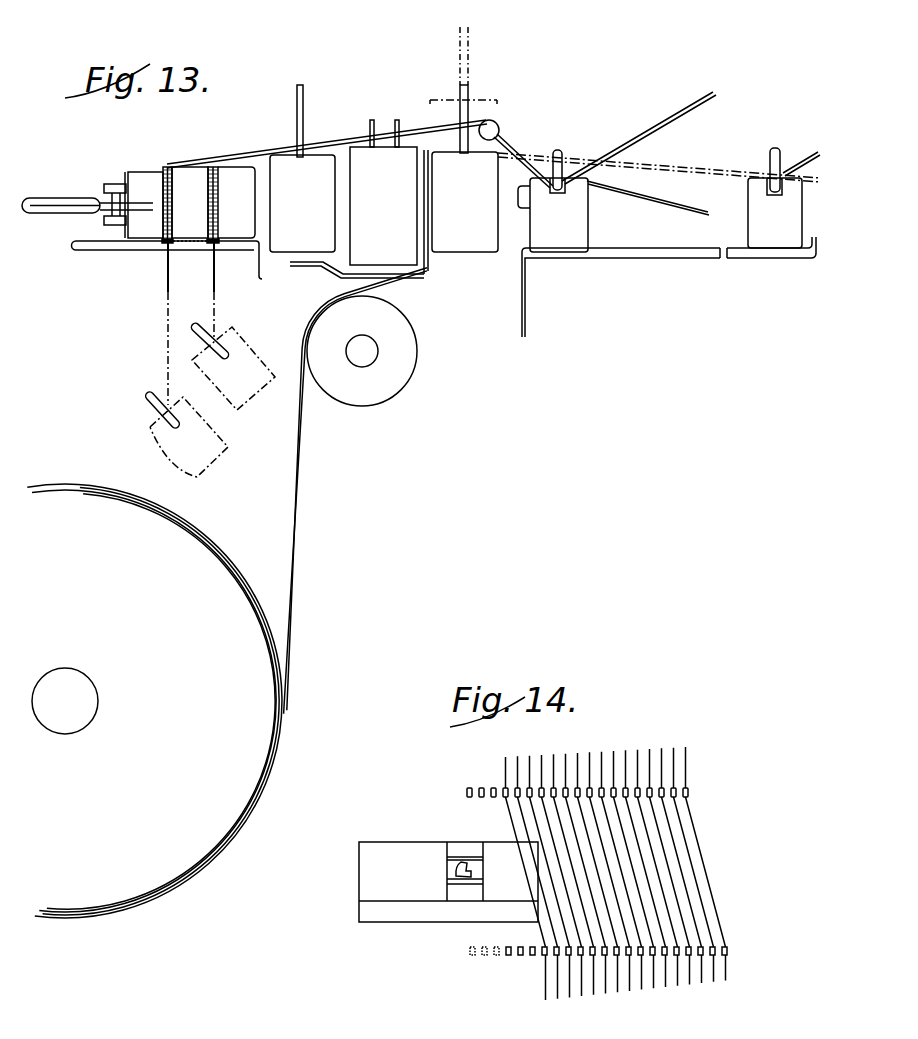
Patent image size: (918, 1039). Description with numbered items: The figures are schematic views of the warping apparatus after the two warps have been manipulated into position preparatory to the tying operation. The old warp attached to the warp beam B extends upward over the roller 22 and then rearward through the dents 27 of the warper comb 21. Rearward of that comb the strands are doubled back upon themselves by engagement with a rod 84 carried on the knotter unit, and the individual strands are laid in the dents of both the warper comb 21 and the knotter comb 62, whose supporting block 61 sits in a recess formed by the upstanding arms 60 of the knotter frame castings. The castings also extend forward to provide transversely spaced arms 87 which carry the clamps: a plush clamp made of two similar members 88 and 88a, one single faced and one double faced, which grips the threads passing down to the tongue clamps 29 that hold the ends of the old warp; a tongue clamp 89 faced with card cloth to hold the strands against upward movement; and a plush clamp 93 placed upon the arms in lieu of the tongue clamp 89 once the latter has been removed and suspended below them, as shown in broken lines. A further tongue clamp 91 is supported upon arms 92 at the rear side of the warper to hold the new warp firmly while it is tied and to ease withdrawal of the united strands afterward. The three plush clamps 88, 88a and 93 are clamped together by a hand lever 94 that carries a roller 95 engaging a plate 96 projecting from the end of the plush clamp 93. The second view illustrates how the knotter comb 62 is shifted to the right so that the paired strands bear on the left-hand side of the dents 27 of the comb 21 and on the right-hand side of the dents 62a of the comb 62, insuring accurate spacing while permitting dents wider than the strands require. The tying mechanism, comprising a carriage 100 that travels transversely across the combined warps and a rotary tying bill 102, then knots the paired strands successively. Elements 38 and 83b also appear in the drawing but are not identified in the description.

In FIG. 13, the hand lever 94 is at (66, 198).
In FIG. 13, the roller 95 is at (104, 222).
In FIG. 13, the plate 96 is at (126, 176).
In FIG. 13, the plush clamp 93 is at (145, 180).
In FIG. 13, the plush clamp member 88a is at (185, 175).
In FIG. 13, the plush clamp member 88 is at (225, 180).
In FIG. 13, the upstanding arms 60 is at (258, 165).
In FIG. 13, the supporting block 61 is at (287, 170).
In FIG. 13, the knotter comb 62 is at (297, 98).
In FIG. 14, the knotter comb 62 is at (518, 957).
In FIG. 14, the dents 62a is at (543, 957).
In FIG. 13, the carriage 100 is at (356, 162).
In FIG. 14, the carriage 100 is at (418, 840).
In FIG. 14, the rotary tying bill 102 is at (470, 860).
In FIG. 13, the warper comb 21 is at (470, 47).
In FIG. 14, the warper comb 21 is at (481, 788).
In FIG. 14, the dents 27 is at (684, 788).
In FIG. 13, the head assembly 38 is at (467, 240).
In FIG. 13, the rod 84 is at (494, 128).
In FIG. 13, the guide plate 83b is at (342, 276).
In FIG. 13, the roller 22 is at (405, 337).
In FIG. 13, the tongue clamps 29 is at (262, 386).
In FIG. 13, the tongue clamp 89 is at (222, 457).
In FIG. 13, the arms 87 is at (110, 252).
In FIG. 13, the tongue clamp 91 is at (578, 221).
In FIG. 13, the arms 92 is at (665, 257).
In FIG. 13, the warp beam B is at (123, 520).